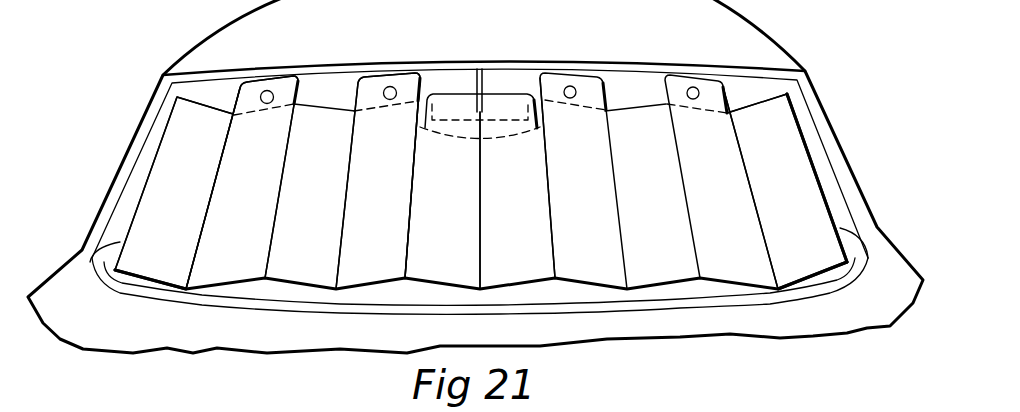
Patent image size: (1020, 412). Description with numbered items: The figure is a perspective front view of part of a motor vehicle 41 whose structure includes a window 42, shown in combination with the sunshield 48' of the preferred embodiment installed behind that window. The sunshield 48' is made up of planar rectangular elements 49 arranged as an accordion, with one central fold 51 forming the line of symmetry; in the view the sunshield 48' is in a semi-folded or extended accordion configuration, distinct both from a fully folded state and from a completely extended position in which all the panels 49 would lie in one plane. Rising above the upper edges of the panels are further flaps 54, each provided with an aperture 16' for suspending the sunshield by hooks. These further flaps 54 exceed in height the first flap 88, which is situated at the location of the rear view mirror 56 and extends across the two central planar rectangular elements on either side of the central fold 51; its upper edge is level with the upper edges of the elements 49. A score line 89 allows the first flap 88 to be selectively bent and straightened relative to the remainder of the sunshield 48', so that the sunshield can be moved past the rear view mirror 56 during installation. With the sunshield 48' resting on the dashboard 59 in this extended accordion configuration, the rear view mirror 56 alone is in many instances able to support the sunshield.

The motor vehicle 41 is at (256, 357).
The window 42 is at (136, 189).
The sunshield 48' is at (517, 181).
The planar rectangular elements 49 is at (386, 232).
The central fold 51 is at (617, 215).
The flaps 54 is at (262, 84).
The apertures 16' is at (320, 122).
The rear view mirror 56 is at (494, 90).
The flap 88 is at (462, 114).
The score line 89 is at (464, 140).
The dashboard 59 is at (655, 297).